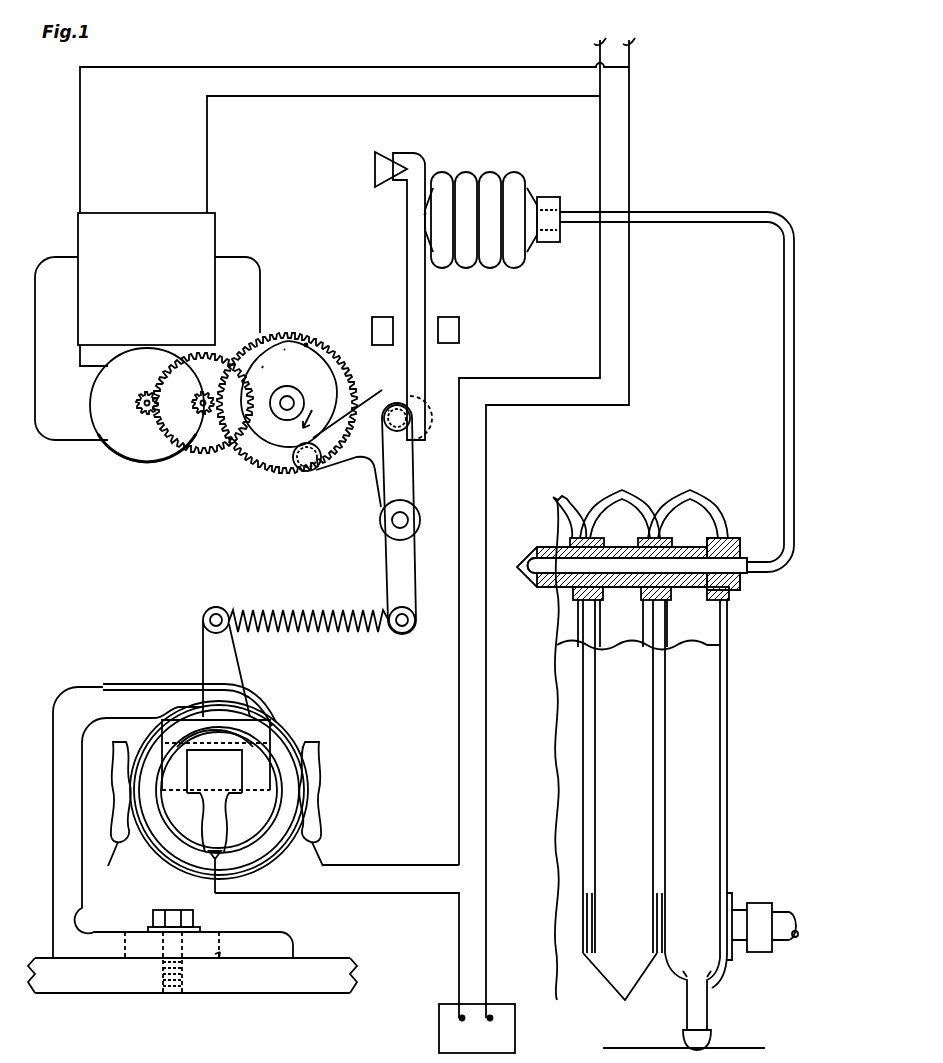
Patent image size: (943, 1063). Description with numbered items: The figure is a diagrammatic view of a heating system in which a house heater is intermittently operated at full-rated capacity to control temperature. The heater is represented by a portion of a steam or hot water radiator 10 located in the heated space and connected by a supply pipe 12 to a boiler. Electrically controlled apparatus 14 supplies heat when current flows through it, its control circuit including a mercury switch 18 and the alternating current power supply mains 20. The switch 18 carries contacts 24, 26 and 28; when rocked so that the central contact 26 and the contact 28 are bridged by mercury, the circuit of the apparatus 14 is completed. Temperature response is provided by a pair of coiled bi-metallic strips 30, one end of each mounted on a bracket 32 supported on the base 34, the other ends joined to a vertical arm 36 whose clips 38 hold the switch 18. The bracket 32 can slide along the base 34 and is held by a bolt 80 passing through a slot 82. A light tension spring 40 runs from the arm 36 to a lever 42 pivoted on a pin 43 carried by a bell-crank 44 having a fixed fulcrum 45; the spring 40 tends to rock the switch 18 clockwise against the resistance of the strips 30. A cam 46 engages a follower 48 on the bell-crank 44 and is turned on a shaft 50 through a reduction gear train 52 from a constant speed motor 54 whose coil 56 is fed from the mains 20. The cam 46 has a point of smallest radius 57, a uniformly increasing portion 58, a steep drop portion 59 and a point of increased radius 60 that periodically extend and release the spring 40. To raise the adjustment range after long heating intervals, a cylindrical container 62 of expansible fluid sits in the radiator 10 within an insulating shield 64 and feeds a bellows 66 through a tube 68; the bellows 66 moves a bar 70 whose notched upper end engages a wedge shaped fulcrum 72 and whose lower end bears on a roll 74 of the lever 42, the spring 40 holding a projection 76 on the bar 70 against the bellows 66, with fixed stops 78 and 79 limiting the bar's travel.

The steam or hot water radiator 10 is at (701, 711).
The supply pipe 12 is at (780, 913).
The electrically controlled apparatus 14 is at (485, 1048).
The mercury switch 18 is at (322, 795).
The alternating current power supply mains 20 is at (628, 44).
The contact 24 is at (110, 866).
The central contact 26 is at (213, 890).
The contact 28 is at (327, 863).
The coiled bi-metallic strips 30 is at (280, 715).
The bracket 32 is at (68, 842).
The base 34 is at (96, 991).
The vertical arm 36 is at (233, 675).
The clips 38 is at (250, 773).
The light tension spring 40 is at (296, 612).
The lever 42 is at (399, 518).
The pin 43 is at (392, 521).
The bell-crank 44 is at (356, 458).
The fixed fulcrum 45 is at (388, 410).
The cam 46 is at (294, 446).
The follower 48 is at (306, 472).
The shaft 50 is at (289, 401).
The reduction gear train 52 is at (158, 409).
The constant speed motor 54 is at (112, 409).
The coil 56 is at (161, 251).
The point of smallest radius 57 is at (262, 367).
The uniformly increasing portion 58 is at (339, 368).
The steep drop portion 59 is at (284, 350).
The point of increased cam radius 60 is at (306, 344).
The cylindrical container 62 is at (740, 558).
The insulating shield 64 is at (539, 541).
The bellows 66 is at (493, 268).
The tube 68 is at (783, 302).
The bar 70 is at (413, 238).
The wedge shaped fulcrum 72 is at (374, 171).
The roll 74 is at (397, 432).
The projection 76 is at (424, 215).
The fixed stop 78 is at (381, 324).
The fixed stop 79 is at (452, 334).
The bolt 80 is at (196, 920).
The slot 82 is at (220, 952).